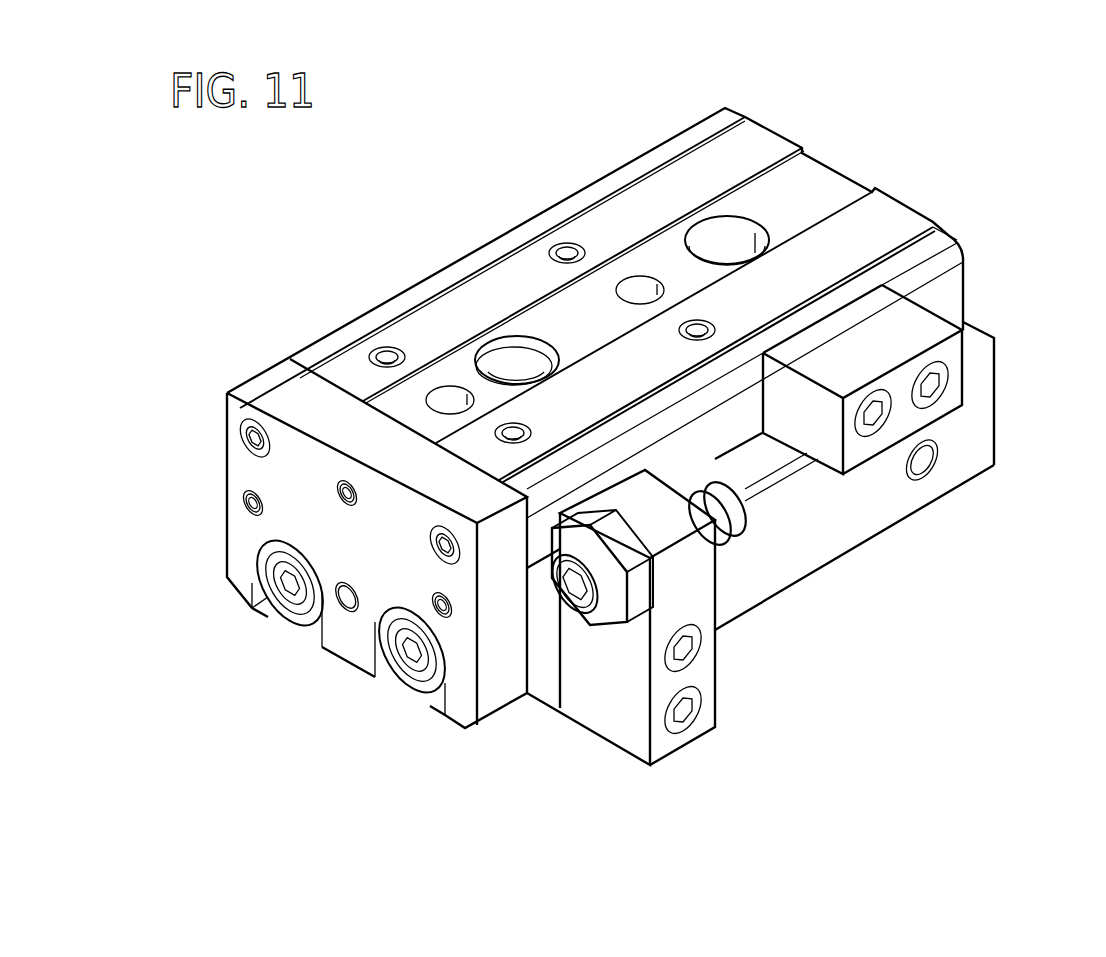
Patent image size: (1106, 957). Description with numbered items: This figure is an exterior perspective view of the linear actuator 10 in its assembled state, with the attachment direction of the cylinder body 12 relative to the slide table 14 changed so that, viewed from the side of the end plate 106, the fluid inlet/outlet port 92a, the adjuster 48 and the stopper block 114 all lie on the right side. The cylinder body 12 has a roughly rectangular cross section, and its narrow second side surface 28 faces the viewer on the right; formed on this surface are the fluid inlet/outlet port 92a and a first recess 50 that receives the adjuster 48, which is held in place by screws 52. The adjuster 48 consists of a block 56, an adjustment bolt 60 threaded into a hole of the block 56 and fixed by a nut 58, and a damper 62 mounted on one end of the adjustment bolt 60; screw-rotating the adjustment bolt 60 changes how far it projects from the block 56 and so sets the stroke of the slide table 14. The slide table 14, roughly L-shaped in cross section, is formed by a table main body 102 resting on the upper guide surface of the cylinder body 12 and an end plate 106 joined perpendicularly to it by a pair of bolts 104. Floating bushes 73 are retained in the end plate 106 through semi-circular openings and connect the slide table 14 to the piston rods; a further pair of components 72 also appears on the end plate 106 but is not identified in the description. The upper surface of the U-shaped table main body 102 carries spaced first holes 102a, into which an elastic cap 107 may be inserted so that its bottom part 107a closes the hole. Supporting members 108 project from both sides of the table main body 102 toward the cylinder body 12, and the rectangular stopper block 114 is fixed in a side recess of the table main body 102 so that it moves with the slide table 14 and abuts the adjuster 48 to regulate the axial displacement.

The linear actuator 10 is at (988, 73).
The cylinder body 12 is at (1006, 372).
The slide table 14 is at (706, 133).
The second side surface 28 is at (810, 568).
The adjuster 48 is at (668, 470).
The first recess 50 is at (581, 723).
The screws 52 is at (703, 708).
The block 56 is at (663, 748).
The nut 58 is at (632, 600).
The adjustment bolt 60 is at (588, 632).
The damper 62 is at (745, 508).
The bolts 72 is at (284, 592).
The floating bushes 73 is at (292, 612).
The fluid inlet/outlet port 92a is at (933, 480).
The table main body 102 is at (437, 305).
The first holes 102a is at (510, 350).
The bolts 104 is at (258, 436).
The end plate 106 is at (230, 565).
The cap 107 is at (512, 368).
The bottom part 107a is at (532, 360).
The supporting members 108 is at (953, 287).
The stopper block 114 is at (818, 357).